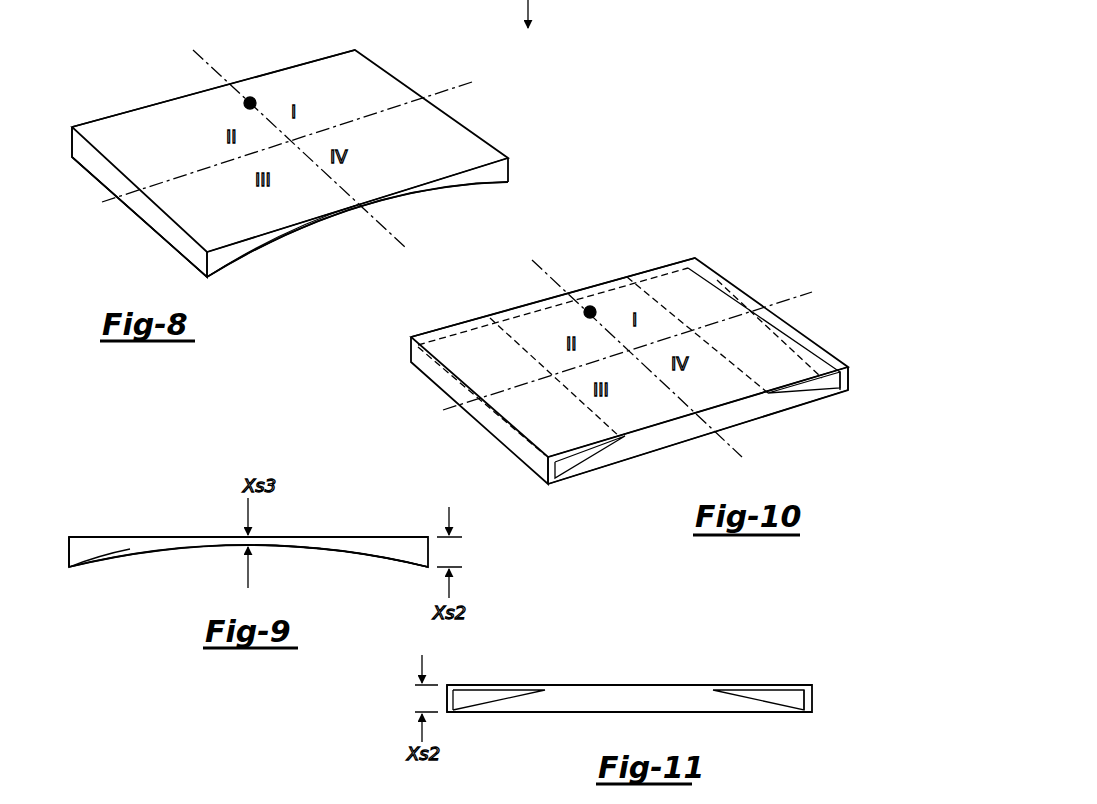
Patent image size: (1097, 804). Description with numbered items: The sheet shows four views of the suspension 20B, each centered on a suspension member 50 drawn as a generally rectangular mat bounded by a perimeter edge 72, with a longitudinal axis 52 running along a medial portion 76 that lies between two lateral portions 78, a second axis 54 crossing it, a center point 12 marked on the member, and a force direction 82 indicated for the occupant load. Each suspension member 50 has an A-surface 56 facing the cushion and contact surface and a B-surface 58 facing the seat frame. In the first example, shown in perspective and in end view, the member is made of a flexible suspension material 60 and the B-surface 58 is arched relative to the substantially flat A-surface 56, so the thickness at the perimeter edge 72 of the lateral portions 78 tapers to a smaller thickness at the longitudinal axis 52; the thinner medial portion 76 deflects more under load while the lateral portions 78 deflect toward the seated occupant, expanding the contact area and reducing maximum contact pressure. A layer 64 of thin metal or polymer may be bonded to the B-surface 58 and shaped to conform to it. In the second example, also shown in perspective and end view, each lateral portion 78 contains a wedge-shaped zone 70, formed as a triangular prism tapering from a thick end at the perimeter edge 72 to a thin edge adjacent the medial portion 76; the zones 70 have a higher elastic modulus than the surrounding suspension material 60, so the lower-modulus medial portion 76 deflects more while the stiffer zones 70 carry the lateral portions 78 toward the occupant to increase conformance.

In FIG. 8, the center point 12 is at (246, 106).
In FIG. 10, the center point 12 is at (585, 314).
In FIG. 8, the suspension 20B is at (522, 112).
In FIG. 10, the suspension 20B is at (769, 282).
In FIG. 8, the suspension member 50 is at (160, 84).
In FIG. 9, the suspension member 50 is at (62, 527).
In FIG. 10, the suspension member 50 is at (830, 278).
In FIG. 11, the suspension member 50 is at (826, 690).
In FIG. 8, the longitudinal axis 52 is at (214, 63).
In FIG. 10, the longitudinal axis 52 is at (563, 282).
In FIG. 8, the second axis 54 is at (446, 90).
In FIG. 10, the second axis 54 is at (798, 296).
In FIG. 8, the A-surface 56 is at (382, 172).
In FIG. 9, the A-surface 56 is at (183, 535).
In FIG. 10, the A-surface 56 is at (650, 422).
In FIG. 11, the A-surface 56 is at (680, 685).
In FIG. 8, the B-surface 58 is at (285, 240).
In FIG. 9, the B-surface 58 is at (215, 550).
In FIG. 10, the B-surface 58 is at (757, 422).
In FIG. 11, the B-surface 58 is at (532, 715).
In FIG. 8, the suspension material 60 is at (193, 203).
In FIG. 9, the suspension material 60 is at (94, 545).
In FIG. 10, the suspension material 60 is at (645, 447).
In FIG. 11, the suspension material 60 is at (572, 698).
In FIG. 8, the layer 64 is at (245, 258).
In FIG. 9, the layer 64 is at (335, 552).
In FIG. 10, the zone 70 is at (712, 280).
In FIG. 11, the zone 70 is at (468, 703).
In FIG. 8, the perimeter edge 72 is at (310, 62).
In FIG. 9, the perimeter edge 72 is at (70, 556).
In FIG. 10, the perimeter edge 72 is at (537, 297).
In FIG. 11, the perimeter edge 72 is at (717, 706).
In FIG. 8, the medial portion 76 is at (350, 224).
In FIG. 9, the medial portion 76 is at (185, 567).
In FIG. 10, the medial portion 76 is at (598, 270).
In FIG. 11, the medial portion 76 is at (622, 680).
In FIG. 8, the lateral portions 78 is at (492, 190).
In FIG. 9, the lateral portions 78 is at (87, 572).
In FIG. 10, the lateral portions 78 is at (666, 256).
In FIG. 11, the lateral portions 78 is at (462, 674).
In FIG. 8, the force direction 82 is at (540, 0).